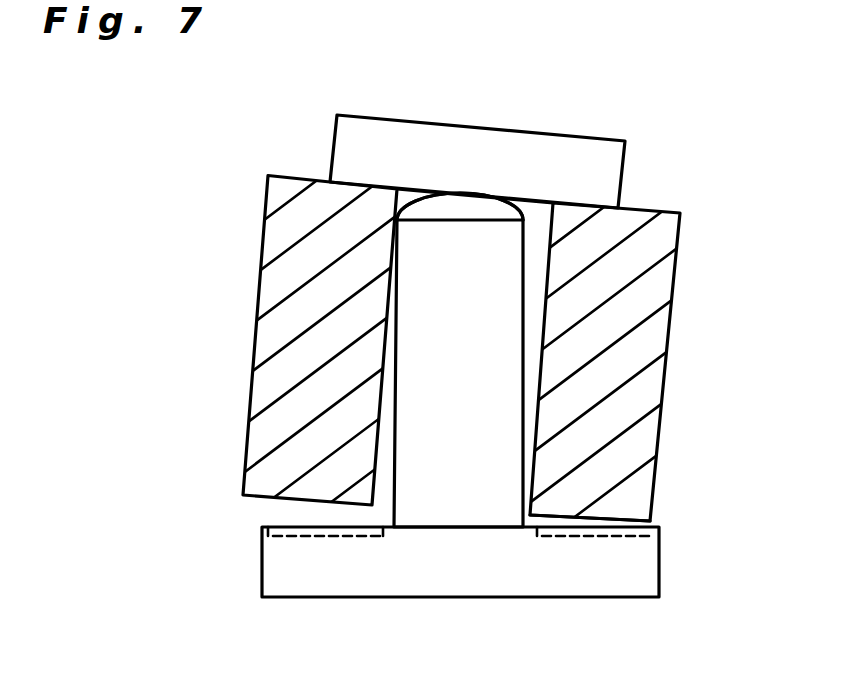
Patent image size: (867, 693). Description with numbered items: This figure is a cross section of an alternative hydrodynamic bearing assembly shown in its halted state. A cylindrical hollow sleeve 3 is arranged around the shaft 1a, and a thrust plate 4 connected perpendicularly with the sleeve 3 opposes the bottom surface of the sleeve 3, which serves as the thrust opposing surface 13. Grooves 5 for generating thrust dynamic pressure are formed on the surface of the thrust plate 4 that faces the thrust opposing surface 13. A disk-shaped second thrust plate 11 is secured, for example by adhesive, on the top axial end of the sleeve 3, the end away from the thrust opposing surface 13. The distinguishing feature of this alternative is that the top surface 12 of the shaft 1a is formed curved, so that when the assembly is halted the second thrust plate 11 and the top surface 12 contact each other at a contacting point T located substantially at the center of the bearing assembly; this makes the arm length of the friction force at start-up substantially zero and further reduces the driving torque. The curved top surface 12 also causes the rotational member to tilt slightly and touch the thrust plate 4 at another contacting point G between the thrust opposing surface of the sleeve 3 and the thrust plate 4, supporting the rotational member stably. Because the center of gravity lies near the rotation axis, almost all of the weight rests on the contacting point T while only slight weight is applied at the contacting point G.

The contacting point T is at (477, 193).
The second thrust plate 11 is at (590, 169).
The shaft 1a is at (500, 291).
The top surface 12 is at (447, 208).
The sleeve 3 is at (632, 381).
The thrust opposing surface 13 is at (600, 507).
The contacting point G is at (647, 525).
The thrust plate 4 is at (630, 568).
The grooves 5 is at (307, 538).